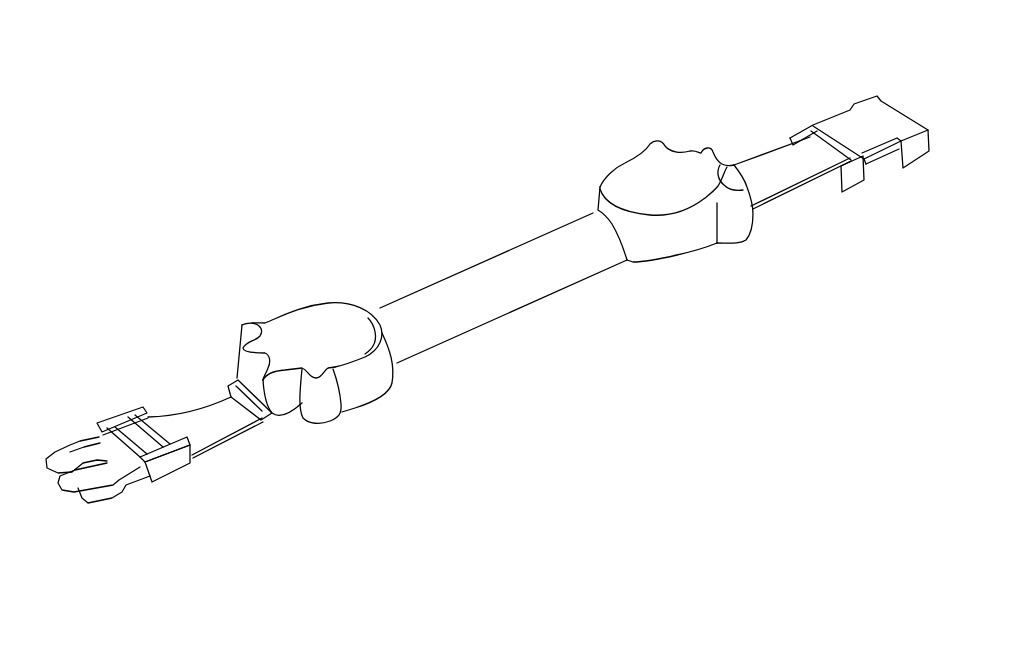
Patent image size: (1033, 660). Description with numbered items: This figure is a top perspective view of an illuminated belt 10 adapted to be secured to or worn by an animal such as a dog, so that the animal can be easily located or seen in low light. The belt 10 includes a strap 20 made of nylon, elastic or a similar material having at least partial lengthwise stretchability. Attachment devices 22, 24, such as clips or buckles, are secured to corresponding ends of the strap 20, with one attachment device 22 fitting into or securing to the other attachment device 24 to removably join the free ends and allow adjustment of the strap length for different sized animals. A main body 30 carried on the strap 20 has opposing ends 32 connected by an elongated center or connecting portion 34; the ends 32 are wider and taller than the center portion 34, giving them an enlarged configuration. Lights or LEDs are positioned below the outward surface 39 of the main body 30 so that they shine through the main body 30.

The belt 10 is at (458, 88).
The strap 20 is at (776, 154).
The attachment device 22 is at (115, 417).
The attachment device 24 is at (870, 112).
The main body 30 is at (465, 212).
The opposing ends 32 is at (303, 317).
The elongated center portion 34 is at (567, 291).
The outward surface 39 is at (487, 309).